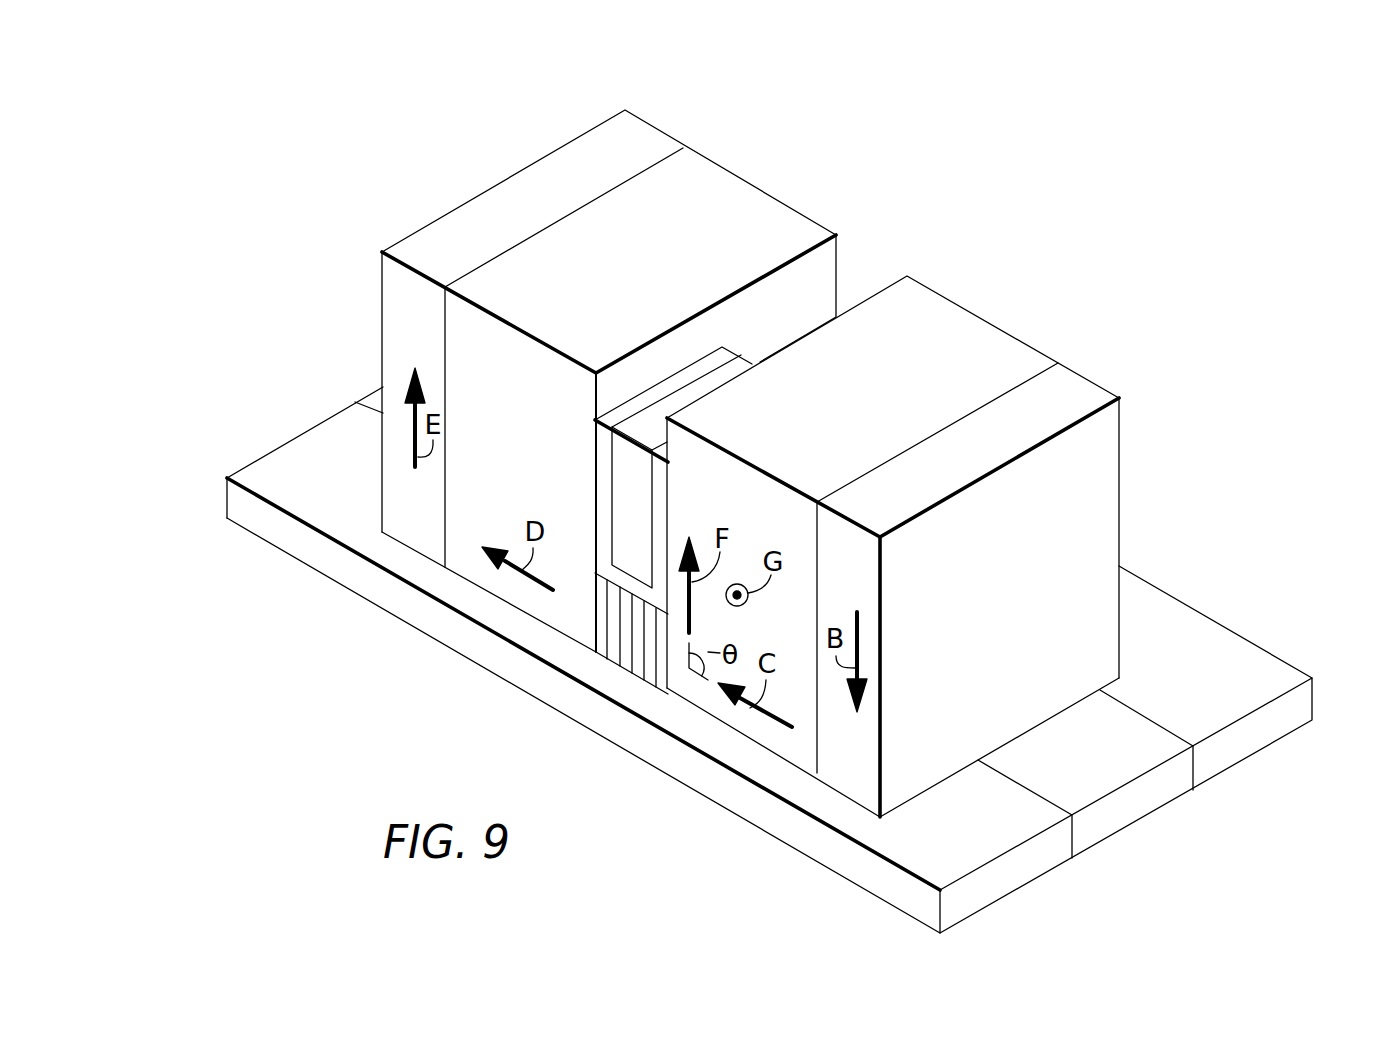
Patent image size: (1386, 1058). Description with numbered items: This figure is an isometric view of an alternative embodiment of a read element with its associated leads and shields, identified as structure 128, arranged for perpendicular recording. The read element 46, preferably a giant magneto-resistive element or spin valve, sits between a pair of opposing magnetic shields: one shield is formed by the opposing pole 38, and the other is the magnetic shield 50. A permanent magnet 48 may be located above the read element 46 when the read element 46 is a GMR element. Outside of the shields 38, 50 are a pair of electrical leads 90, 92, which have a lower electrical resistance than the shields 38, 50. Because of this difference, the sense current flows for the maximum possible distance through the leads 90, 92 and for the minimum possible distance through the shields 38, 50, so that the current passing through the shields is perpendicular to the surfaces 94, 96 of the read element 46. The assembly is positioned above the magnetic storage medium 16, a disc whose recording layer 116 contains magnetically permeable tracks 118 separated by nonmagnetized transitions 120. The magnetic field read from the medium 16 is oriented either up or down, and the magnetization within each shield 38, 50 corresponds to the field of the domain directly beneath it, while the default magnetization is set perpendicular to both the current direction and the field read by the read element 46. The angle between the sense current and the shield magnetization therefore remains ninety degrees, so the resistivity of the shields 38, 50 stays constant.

The magnetic storage medium 16 is at (296, 394).
The structure 128 is at (650, 388).
The recording layer 116 is at (1262, 594).
The electrical lead 92 is at (510, 219).
The magnetic shield 50 is at (618, 274).
The opposing pole 38 is at (847, 406).
The electrical lead 90 is at (980, 623).
The permanent magnet 48 is at (615, 516).
The read element 46 is at (638, 654).
The surface of the read element 96 is at (605, 633).
The surface of the read element 94 is at (672, 669).
The magnetically permeable tracks 118 is at (940, 836).
The nonmagnetized transitions 120 is at (1058, 770).